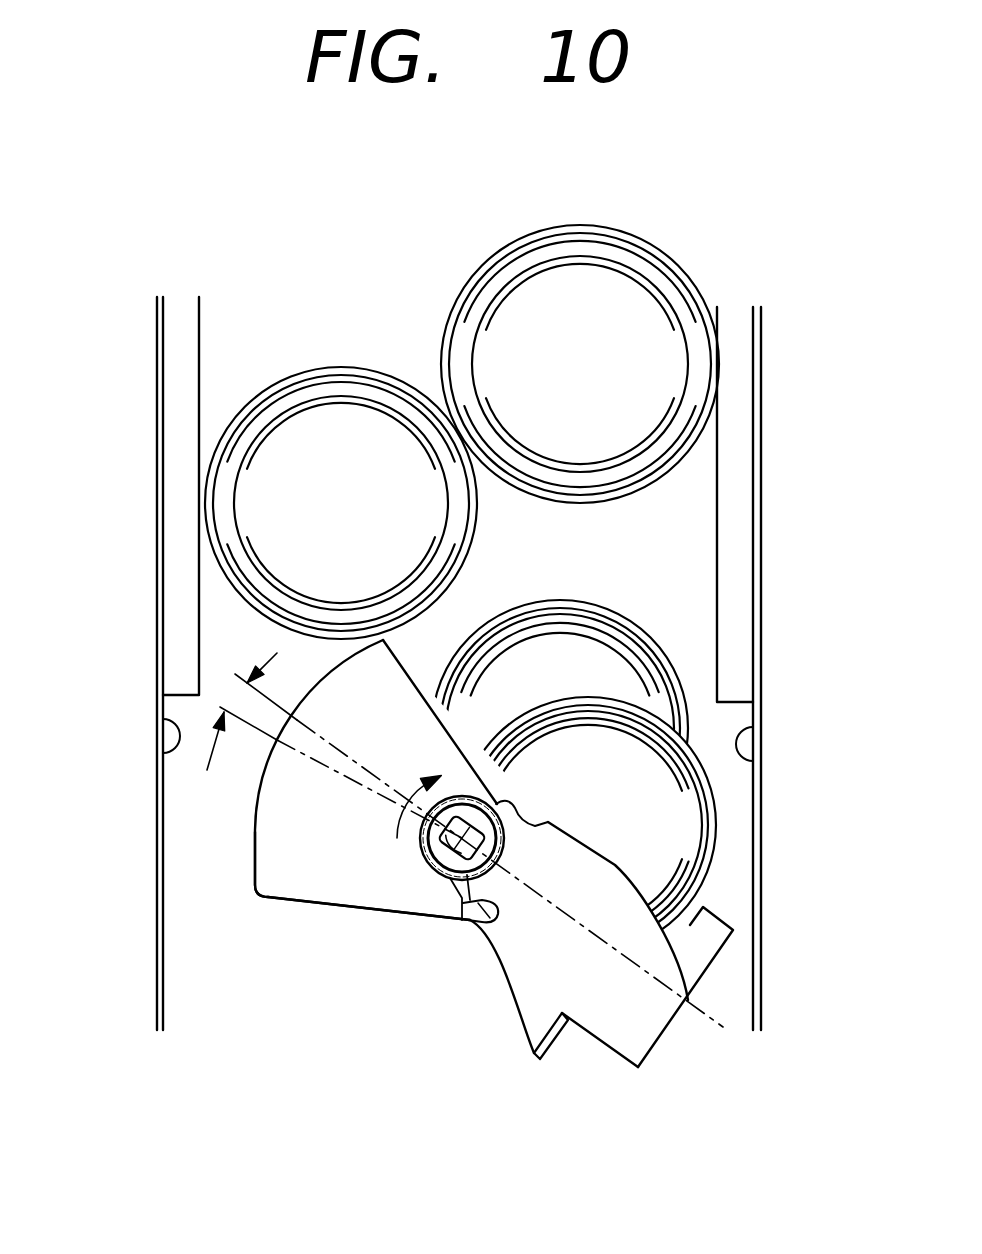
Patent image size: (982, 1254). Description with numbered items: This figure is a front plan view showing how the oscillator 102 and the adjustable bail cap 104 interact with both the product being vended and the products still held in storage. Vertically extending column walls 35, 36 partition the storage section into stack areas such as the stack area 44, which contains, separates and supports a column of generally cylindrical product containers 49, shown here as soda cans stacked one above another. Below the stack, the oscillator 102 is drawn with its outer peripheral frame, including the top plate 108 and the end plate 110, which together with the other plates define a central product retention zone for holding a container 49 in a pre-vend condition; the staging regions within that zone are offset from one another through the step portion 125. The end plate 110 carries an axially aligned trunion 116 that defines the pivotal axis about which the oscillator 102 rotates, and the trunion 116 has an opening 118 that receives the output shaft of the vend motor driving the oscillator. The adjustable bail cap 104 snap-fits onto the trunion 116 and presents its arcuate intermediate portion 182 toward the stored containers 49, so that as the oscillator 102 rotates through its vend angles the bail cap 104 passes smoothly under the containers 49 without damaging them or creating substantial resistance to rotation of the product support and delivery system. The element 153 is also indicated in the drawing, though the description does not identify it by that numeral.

The column wall 35 is at (160, 716).
The column wall 36 is at (756, 727).
The stack area 44 is at (338, 327).
The product container 49 is at (593, 382).
The oscillator 102 is at (620, 857).
The adjustable bail cap 104 is at (253, 830).
The top plate 108 is at (307, 873).
The end plate 110 is at (587, 973).
The trunion 116 is at (500, 848).
The opening 118 is at (465, 898).
The step portion 125 is at (643, 1033).
The bar 153 is at (535, 1026).
The arcuate intermediate portion 182 is at (253, 870).